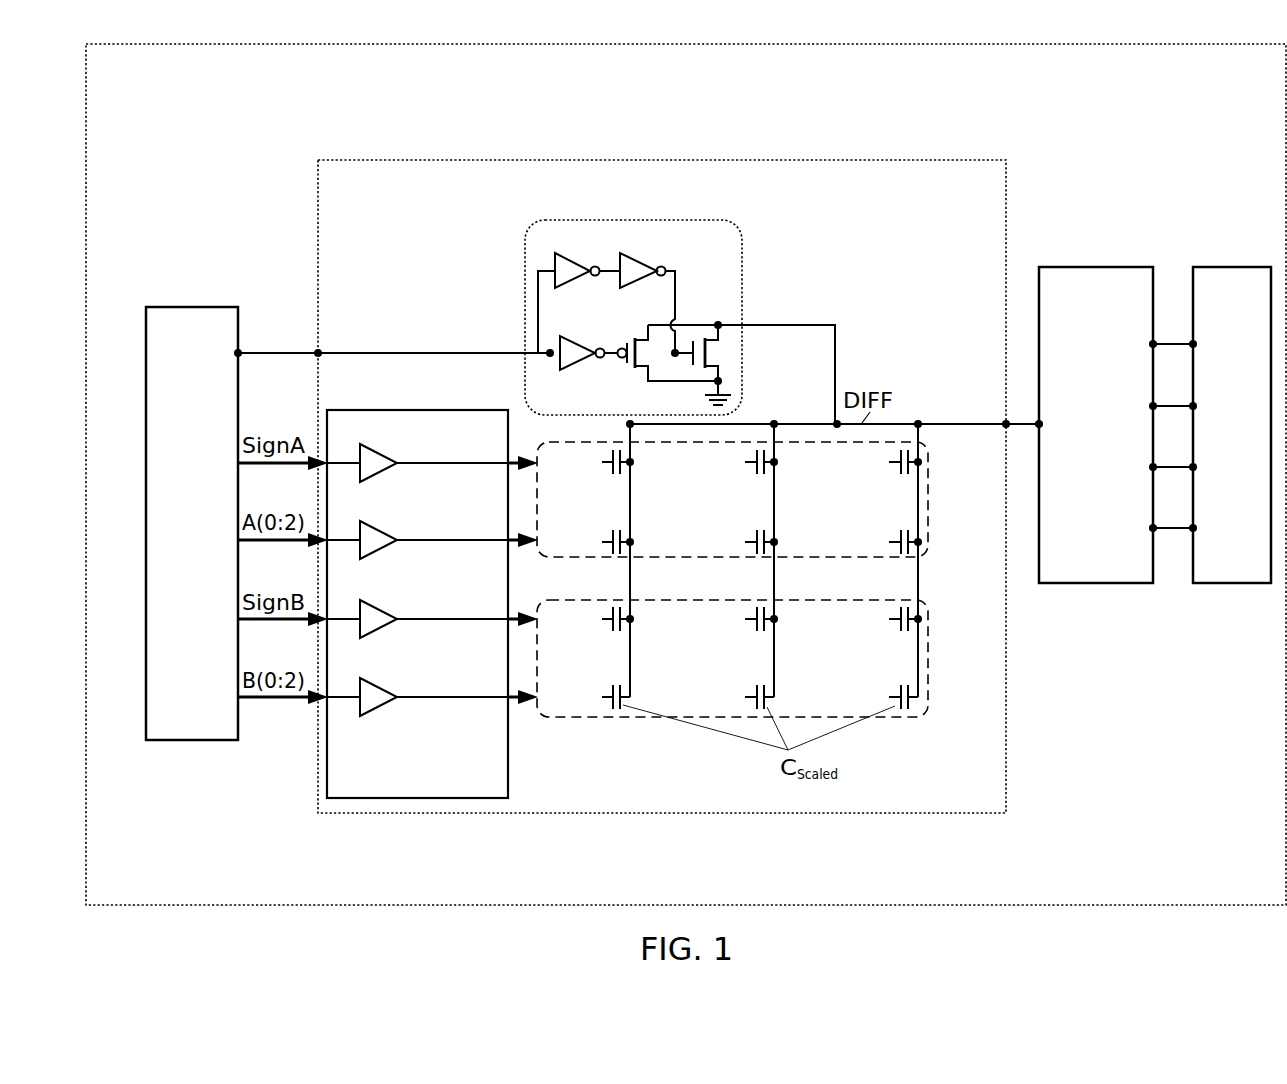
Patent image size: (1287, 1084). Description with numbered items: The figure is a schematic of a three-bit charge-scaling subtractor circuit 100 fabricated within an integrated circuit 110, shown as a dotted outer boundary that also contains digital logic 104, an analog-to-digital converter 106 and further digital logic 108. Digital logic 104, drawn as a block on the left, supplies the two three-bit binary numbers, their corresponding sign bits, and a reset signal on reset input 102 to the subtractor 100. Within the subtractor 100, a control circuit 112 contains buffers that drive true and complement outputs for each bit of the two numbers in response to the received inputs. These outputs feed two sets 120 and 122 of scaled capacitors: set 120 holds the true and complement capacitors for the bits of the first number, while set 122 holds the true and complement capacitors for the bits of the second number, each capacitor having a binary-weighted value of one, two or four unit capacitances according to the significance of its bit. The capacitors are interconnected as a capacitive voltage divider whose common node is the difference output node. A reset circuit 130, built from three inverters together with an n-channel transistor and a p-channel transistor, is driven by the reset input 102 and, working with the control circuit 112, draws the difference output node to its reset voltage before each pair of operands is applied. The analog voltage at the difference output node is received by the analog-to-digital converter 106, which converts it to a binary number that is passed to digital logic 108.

The 3-bit charge-scaling subtractor circuit 100 is at (568, 138).
The reset input 102 is at (381, 341).
The digital logic 104 is at (210, 504).
The analog-to-digital converter 106 is at (1113, 391).
The digital logic 108 is at (1250, 406).
The integrated circuit 110 is at (268, 887).
The control circuit 112 is at (430, 764).
The set of scaled capacitors 120 is at (929, 494).
The set of scaled capacitors 122 is at (929, 650).
The reset circuit 130 is at (527, 222).